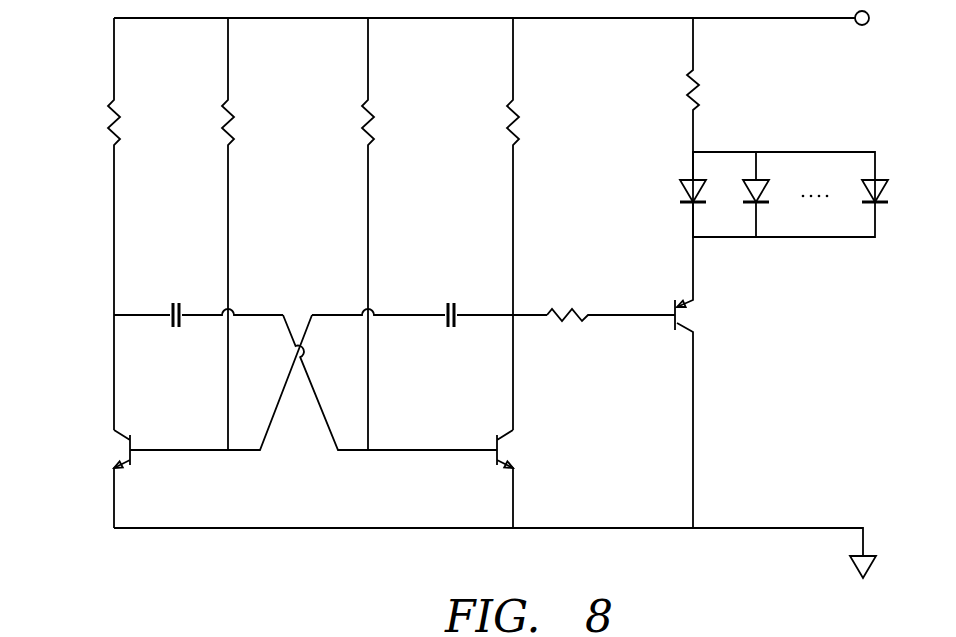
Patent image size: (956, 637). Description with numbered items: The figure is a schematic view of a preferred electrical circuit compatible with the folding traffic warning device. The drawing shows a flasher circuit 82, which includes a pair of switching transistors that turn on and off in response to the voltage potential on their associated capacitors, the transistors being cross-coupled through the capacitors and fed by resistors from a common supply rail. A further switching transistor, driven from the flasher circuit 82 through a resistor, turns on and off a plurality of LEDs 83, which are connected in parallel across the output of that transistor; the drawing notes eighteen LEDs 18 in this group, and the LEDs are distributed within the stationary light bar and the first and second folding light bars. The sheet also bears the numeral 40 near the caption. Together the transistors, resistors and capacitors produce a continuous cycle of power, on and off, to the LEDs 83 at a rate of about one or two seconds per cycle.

The LEDs 18 is at (784, 164).
The light emitting circuit 40 is at (52, 0).
The flasher circuit 82 is at (95, 400).
The LEDs 83 is at (870, 256).